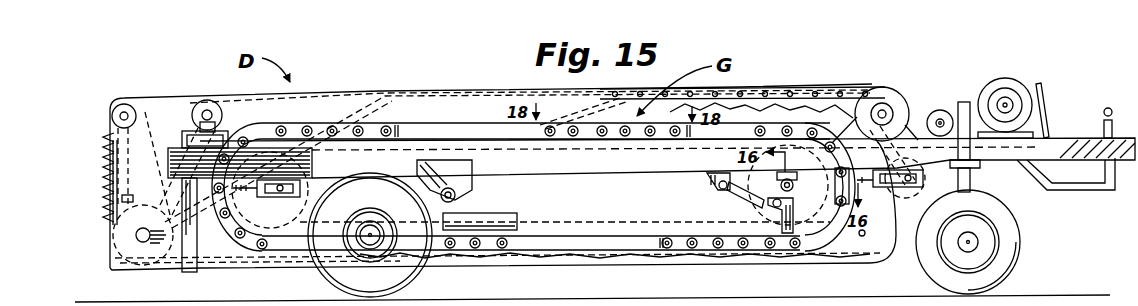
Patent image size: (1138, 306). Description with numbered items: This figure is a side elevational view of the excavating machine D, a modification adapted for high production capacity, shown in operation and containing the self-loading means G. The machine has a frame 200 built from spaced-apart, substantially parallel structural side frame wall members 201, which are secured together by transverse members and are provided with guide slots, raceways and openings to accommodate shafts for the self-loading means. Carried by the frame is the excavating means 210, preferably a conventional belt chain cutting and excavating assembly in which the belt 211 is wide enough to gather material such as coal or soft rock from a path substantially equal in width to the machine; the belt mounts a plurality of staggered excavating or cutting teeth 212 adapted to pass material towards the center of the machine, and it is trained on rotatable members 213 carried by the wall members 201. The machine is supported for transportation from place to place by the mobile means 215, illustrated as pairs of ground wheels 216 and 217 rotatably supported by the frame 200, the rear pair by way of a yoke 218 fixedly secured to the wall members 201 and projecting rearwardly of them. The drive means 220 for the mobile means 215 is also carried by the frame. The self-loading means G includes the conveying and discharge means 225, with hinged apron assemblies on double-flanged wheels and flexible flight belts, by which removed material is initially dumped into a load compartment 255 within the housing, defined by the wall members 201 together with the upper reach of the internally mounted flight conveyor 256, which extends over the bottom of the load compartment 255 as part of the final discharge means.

The frame 200 is at (472, 110).
The side frame wall members 201 is at (818, 247).
The excavating means 210 is at (88, 168).
The belt 211 is at (107, 188).
The excavating or cutting teeth 212 is at (103, 213).
The rotatable members 213 is at (133, 115).
The mobile means 215 is at (430, 282).
The ground wheels 216 is at (342, 283).
The ground wheels 217 is at (942, 273).
The yoke 218 is at (1065, 140).
The drive means 220 is at (475, 203).
The conveying and discharge means 225 is at (608, 136).
The load compartment 255 is at (707, 217).
The flight conveyor 256 is at (590, 234).